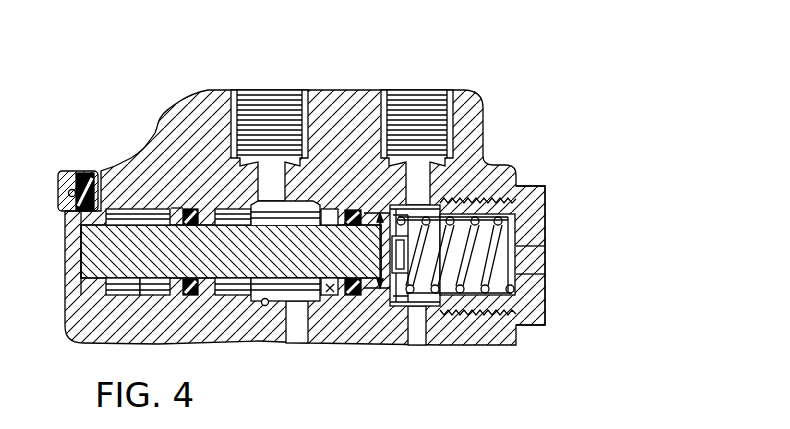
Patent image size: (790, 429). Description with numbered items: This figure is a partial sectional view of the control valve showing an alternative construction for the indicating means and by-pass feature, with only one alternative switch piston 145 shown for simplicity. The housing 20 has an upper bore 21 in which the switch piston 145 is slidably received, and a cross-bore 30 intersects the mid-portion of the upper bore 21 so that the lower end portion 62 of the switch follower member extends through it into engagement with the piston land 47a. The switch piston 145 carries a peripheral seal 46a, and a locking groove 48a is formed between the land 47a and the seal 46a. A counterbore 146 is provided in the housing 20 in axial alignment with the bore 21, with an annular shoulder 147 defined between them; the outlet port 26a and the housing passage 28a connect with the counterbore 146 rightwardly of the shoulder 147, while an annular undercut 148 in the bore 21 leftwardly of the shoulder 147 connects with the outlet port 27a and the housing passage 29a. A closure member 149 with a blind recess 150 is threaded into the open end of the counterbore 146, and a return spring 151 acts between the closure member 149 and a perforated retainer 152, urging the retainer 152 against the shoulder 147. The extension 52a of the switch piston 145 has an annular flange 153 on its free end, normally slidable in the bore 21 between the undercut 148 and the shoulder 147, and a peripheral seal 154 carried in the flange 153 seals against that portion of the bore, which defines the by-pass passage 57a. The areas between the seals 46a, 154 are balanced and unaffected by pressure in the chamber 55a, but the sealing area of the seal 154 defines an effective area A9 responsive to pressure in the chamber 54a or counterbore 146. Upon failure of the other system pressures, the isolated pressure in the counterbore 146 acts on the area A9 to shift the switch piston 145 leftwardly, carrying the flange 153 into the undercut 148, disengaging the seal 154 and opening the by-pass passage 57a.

The housing 20 is at (472, 117).
The upper bore 21 is at (124, 201).
The outlet port 26a is at (441, 82).
The outlet port 27a is at (290, 82).
The vertical passage 28a is at (412, 329).
The vertical passage 29a is at (298, 334).
The cross-bore 30 is at (55, 188).
The peripheral seal 46a is at (184, 205).
The land or positioning portion 47a is at (93, 292).
The locking groove 48a is at (128, 288).
The extension 52a is at (240, 252).
The fluid pressure chamber 54a is at (492, 251).
The fluid pressure chamber 55a is at (228, 283).
The by-pass passage 57a is at (307, 268).
The lower end portion of follower member 62 is at (80, 165).
The switch piston 145 is at (165, 190).
The counterbore 146 is at (508, 297).
The annular shoulder 147 is at (388, 294).
The annular groove or undercut 148 is at (257, 298).
The closure member 149 is at (525, 191).
The blind bore or recess 150 is at (510, 237).
The centering or return spring 151 is at (508, 266).
The perforated retainer 152 is at (404, 266).
The annular flange 153 is at (365, 199).
The peripheral seal 154 is at (343, 288).
The effective area A9 is at (370, 240).